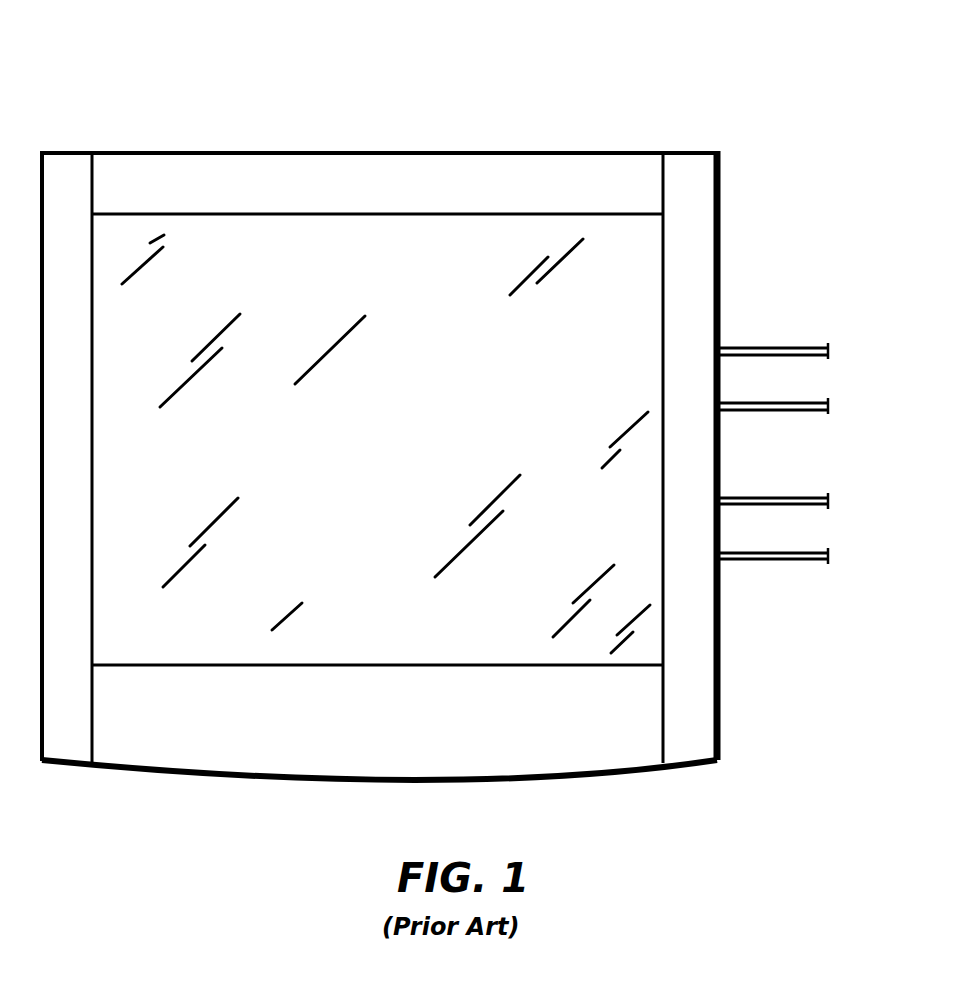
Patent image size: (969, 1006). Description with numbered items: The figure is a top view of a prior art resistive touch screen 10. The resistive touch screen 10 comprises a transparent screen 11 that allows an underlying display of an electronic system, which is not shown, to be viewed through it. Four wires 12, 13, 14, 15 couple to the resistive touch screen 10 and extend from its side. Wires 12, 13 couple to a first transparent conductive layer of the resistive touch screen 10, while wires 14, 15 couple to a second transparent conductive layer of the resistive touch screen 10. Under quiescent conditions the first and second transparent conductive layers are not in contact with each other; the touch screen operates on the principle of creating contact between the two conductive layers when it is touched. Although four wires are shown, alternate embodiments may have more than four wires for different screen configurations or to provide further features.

The resistive touch screen 10 is at (721, 100).
The transparent screen 11 is at (398, 448).
The wire 12 is at (813, 344).
The wire 13 is at (813, 399).
The wire 14 is at (813, 494).
The wire 15 is at (813, 549).